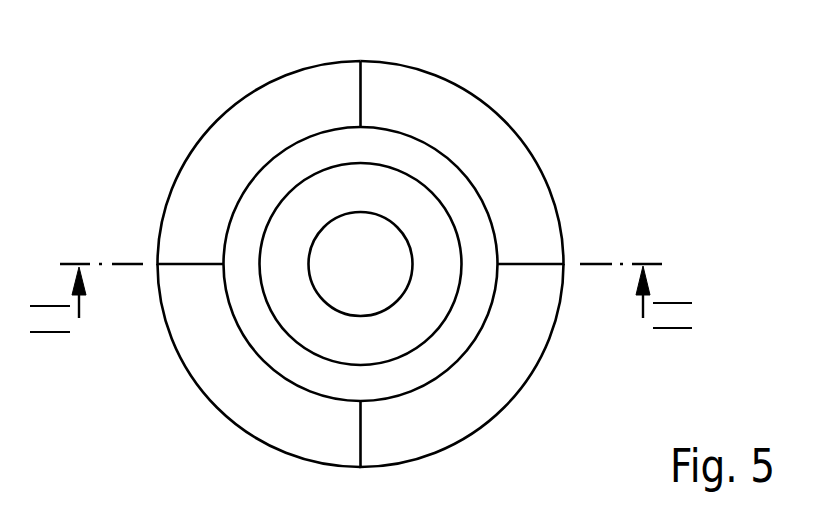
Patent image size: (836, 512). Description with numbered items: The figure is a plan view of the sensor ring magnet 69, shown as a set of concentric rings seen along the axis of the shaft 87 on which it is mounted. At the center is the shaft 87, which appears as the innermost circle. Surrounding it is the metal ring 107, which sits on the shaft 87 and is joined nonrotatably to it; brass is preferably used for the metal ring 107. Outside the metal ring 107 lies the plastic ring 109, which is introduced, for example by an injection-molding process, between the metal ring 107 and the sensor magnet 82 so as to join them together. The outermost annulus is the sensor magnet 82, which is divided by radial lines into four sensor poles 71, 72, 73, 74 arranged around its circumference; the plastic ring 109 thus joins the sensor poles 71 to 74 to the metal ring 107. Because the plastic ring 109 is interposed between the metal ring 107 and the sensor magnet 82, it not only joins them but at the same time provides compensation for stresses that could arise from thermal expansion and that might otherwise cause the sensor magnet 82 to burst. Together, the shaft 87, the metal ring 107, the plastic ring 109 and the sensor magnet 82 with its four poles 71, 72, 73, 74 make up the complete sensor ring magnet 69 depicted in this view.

The sensor ring magnet 69 is at (157, 191).
The sensor pole 71 is at (447, 98).
The sensor pole 72 is at (503, 368).
The sensor pole 73 is at (215, 367).
The sensor pole 74 is at (277, 98).
The sensor magnet 82 is at (200, 138).
The shaft 87 is at (413, 262).
The metal ring 107 is at (427, 208).
The plastic ring 109 is at (432, 167).